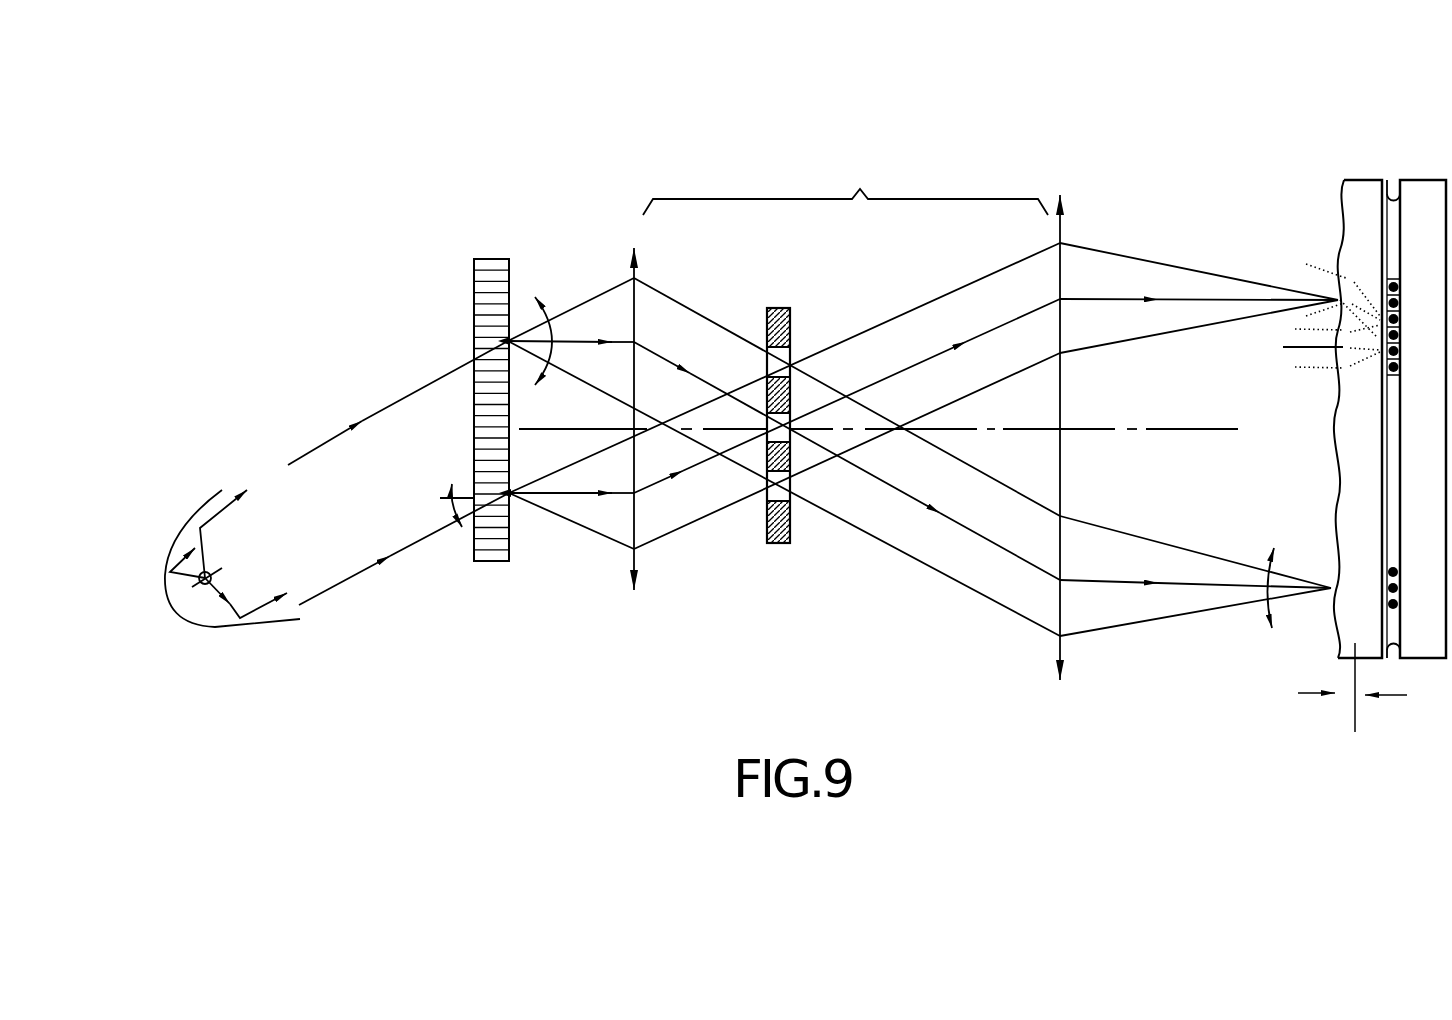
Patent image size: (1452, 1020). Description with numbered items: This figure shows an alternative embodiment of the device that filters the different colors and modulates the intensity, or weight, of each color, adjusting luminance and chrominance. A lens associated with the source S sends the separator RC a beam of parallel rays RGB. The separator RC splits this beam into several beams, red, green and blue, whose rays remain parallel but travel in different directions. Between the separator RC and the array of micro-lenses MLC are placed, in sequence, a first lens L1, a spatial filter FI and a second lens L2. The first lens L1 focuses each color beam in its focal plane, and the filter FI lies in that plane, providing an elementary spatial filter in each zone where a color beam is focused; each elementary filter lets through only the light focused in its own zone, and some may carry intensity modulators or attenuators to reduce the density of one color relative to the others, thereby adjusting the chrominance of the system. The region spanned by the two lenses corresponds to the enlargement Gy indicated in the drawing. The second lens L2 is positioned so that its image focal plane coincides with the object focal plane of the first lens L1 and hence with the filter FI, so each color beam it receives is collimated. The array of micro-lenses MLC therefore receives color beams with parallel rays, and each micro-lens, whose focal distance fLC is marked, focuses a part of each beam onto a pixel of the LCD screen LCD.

The source S is at (215, 561).
The beam of parallel rays RGB is at (399, 471).
The separator RC is at (496, 260).
The first lens L1 is at (634, 250).
The enlargement factor Gy is at (845, 188).
The spatial filter FI is at (782, 308).
The second lens L2 is at (1063, 200).
The array of micro-lenses MLC is at (1365, 184).
The LCD screen LCD is at (1394, 191).
The microlens focal length fLC is at (1312, 687).